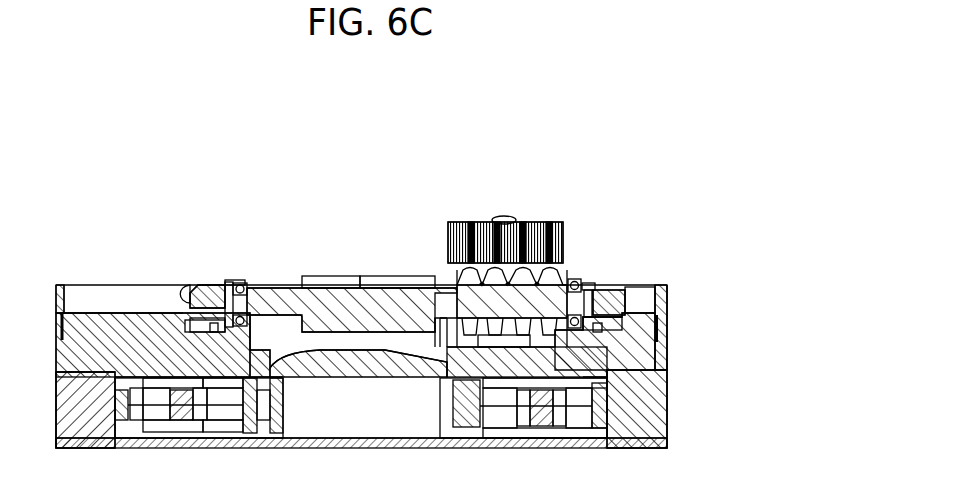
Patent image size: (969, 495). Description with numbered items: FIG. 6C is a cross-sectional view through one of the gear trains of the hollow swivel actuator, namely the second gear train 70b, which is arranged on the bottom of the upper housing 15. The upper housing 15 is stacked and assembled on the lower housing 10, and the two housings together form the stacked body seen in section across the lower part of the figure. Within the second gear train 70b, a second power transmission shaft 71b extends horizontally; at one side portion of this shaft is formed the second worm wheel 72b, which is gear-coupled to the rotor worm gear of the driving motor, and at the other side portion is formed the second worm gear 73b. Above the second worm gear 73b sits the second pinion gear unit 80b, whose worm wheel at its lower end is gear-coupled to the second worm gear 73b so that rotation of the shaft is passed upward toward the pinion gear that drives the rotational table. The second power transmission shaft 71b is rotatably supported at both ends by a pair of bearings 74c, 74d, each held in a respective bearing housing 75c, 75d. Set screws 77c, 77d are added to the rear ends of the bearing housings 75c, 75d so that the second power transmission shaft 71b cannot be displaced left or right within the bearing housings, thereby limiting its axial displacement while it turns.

The lower housing 10 is at (672, 417).
The upper housing 15 is at (673, 348).
The second gear train 70b is at (452, 251).
The second power transmission shaft 71b is at (282, 297).
The second worm wheel 72b is at (398, 276).
The second worm gear 73b is at (560, 270).
The bearing 74c is at (575, 279).
The bearing 74d is at (240, 283).
The bearing housing 75c is at (600, 297).
The bearing housing 75d is at (210, 297).
The set screw 77c is at (666, 294).
The set screw 77d is at (182, 290).
The second pinion gear unit 80b is at (563, 188).